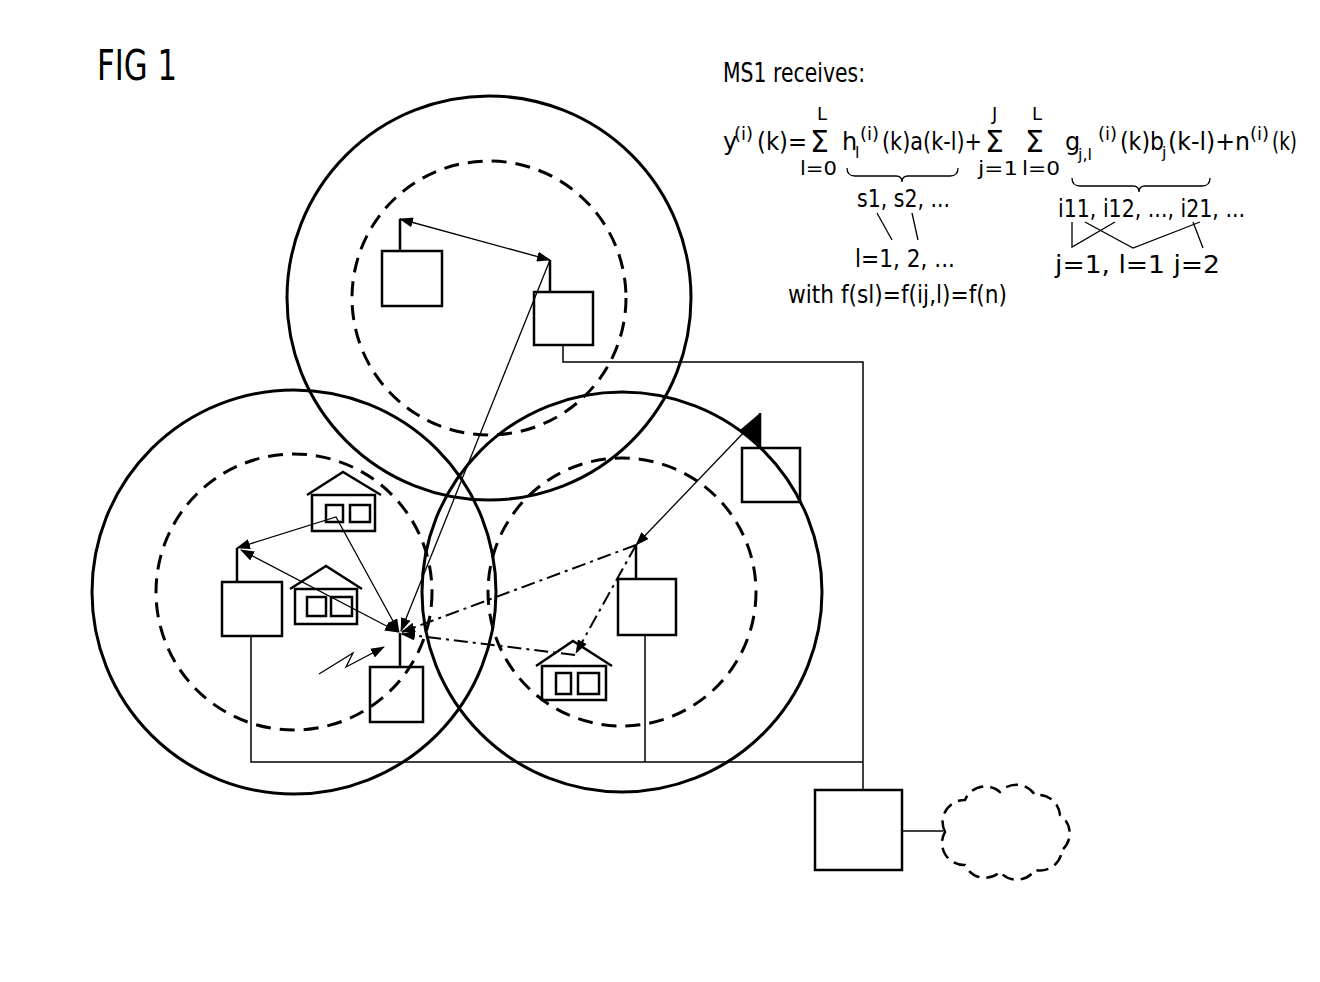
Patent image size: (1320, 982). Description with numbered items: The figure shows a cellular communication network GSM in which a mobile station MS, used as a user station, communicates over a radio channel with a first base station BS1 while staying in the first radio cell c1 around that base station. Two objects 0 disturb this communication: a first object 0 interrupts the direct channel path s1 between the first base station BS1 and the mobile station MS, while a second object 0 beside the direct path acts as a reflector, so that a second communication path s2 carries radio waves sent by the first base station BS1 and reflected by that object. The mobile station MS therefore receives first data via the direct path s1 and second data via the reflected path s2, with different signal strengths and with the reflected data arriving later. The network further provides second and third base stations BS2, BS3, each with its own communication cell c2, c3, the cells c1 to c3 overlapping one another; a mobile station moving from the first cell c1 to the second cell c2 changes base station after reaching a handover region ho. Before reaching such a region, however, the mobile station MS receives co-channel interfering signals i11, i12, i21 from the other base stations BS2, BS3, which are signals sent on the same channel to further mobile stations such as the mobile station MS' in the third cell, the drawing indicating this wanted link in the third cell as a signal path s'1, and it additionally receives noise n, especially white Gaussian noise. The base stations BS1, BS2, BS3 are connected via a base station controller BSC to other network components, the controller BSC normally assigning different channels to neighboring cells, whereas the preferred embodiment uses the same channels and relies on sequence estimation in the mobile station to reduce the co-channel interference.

The handover region ho is at (211, 403).
The first radio cell c1 is at (263, 457).
The second communication cell c2 is at (758, 619).
The third communication cell c3 is at (520, 163).
The first base station BS1 is at (252, 592).
The second base station BS2 is at (647, 590).
The third base station BS3 is at (563, 302).
The base station controller BSC is at (858, 830).
The cellular communication network GSM is at (1006, 832).
The mobile station MS is at (396, 677).
The further mobile station MS' is at (412, 262).
The object 0 is at (310, 492).
The direct communication path s1 is at (377, 617).
The second communication path s2 is at (356, 558).
The signal path in cell 3 s'1 is at (475, 224).
The interfering signal i11 is at (539, 580).
The interfering signal i12 is at (598, 612).
The interfering signal i21 is at (510, 352).
The noise n is at (319, 675).